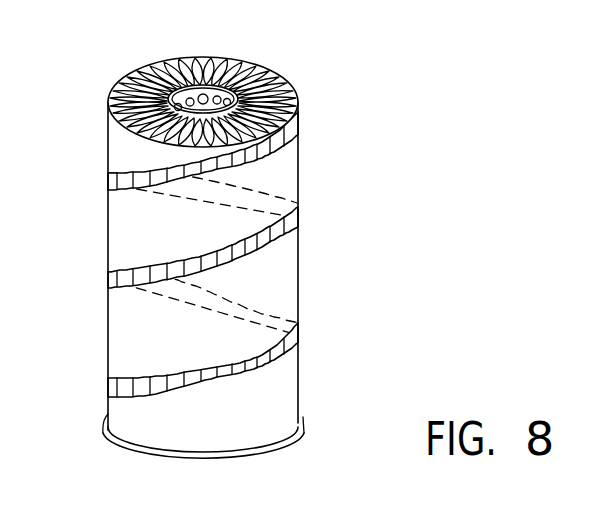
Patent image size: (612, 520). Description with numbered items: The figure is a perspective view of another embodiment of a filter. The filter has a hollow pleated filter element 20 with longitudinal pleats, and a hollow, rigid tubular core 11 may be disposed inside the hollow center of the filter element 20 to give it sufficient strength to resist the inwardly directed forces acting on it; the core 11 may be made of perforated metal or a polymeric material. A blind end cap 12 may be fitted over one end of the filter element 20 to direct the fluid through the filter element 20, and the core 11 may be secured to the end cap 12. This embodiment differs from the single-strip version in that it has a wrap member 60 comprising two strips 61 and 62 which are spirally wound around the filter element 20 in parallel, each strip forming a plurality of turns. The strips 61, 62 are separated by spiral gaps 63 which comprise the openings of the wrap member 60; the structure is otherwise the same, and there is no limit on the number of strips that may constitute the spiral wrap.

The hollow rigid tubular core 11 is at (201, 90).
The blind end cap 12 is at (266, 452).
The hollow pleated filter element 20 is at (239, 63).
The wrap member 60 is at (300, 259).
The strip 61 is at (118, 163).
The strip 62 is at (130, 228).
The spiral gaps 63 is at (118, 283).